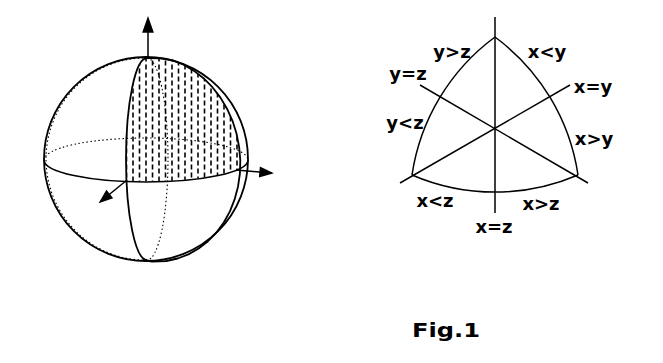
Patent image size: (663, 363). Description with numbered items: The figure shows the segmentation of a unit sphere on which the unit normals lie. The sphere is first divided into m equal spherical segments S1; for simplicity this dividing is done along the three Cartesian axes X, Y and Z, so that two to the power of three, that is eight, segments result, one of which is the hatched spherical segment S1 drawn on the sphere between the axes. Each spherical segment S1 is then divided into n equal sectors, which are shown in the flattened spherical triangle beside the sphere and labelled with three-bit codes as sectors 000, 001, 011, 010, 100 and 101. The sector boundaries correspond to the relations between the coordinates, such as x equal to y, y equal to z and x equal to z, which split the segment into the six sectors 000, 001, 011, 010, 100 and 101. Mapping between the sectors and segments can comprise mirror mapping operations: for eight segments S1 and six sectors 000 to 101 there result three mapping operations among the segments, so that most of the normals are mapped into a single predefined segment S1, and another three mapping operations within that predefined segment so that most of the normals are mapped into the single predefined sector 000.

The spherical segment S1 is at (183, 119).
The X axis X is at (262, 158).
The Y axis Y is at (162, 38).
The Z axis Z is at (113, 200).
The sector 001 is at (453, 106).
The sector 011 is at (536, 106).
The sector 101 is at (504, 134).
The sector 010 is at (485, 134).
The sector 100 is at (495, 175).
The sector 000 is at (515, 115).